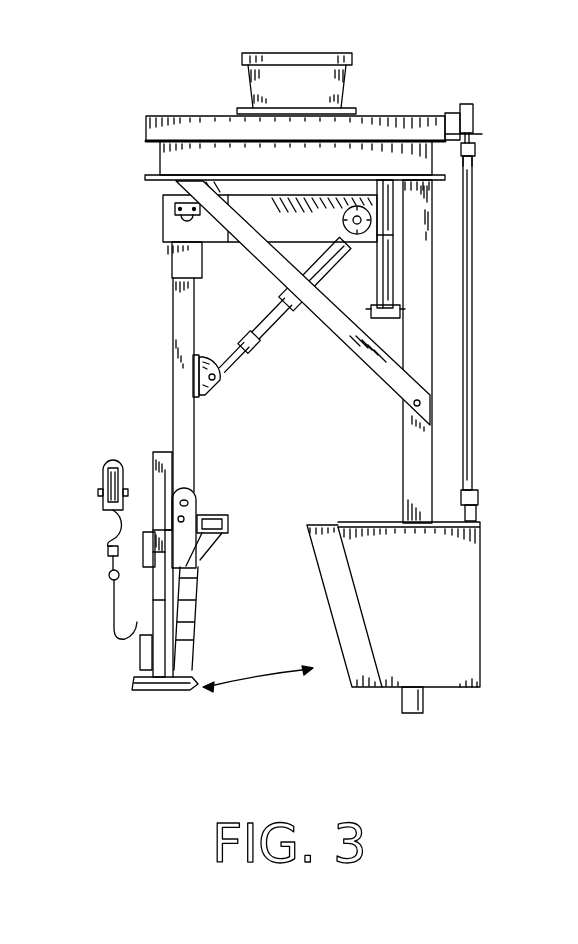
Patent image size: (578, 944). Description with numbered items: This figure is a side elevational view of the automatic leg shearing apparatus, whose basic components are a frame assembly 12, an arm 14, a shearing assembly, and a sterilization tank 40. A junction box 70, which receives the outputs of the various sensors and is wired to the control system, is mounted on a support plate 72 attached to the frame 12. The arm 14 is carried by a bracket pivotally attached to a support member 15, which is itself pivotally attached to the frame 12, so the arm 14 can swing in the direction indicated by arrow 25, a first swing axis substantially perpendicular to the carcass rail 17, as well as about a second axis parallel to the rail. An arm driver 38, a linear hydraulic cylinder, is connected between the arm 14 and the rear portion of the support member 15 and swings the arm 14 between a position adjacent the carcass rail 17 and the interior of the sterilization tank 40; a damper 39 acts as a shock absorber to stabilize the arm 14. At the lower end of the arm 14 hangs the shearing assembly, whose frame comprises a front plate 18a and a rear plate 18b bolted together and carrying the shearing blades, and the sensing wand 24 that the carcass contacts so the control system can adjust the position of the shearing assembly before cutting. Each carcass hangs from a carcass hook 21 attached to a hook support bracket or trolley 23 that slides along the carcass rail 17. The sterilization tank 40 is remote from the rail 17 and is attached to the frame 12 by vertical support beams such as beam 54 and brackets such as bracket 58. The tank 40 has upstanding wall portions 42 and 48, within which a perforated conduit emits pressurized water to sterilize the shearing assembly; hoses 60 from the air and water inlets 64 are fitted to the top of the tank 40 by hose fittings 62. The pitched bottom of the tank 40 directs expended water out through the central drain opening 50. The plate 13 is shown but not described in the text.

The frame assembly 12 is at (397, 120).
The lower plate 13 is at (160, 166).
The arm 14 is at (173, 348).
The support member 15 is at (163, 220).
The carcass rail 17 is at (110, 534).
The front plate 18a is at (153, 597).
The rear plate 18b is at (200, 600).
The carcass hook 21 is at (120, 637).
The hook support bracket or trolley 23 is at (102, 477).
The sensing wand 24 is at (180, 692).
The arrow 25 is at (253, 687).
The arm driver 38 is at (248, 344).
The damper 39 is at (380, 256).
The sterilization tank 40 is at (482, 588).
The upstanding wall portion 42 is at (347, 618).
The upstanding wall portion 48 is at (437, 609).
The drain opening 50 is at (424, 700).
The vertical support beam 54 is at (406, 458).
The bracket 58 is at (362, 346).
The hoses 60 is at (476, 344).
The hose fittings 62 is at (477, 150).
The inlets 64 is at (477, 106).
The junction box 70 is at (335, 92).
The support plate 72 is at (146, 129).